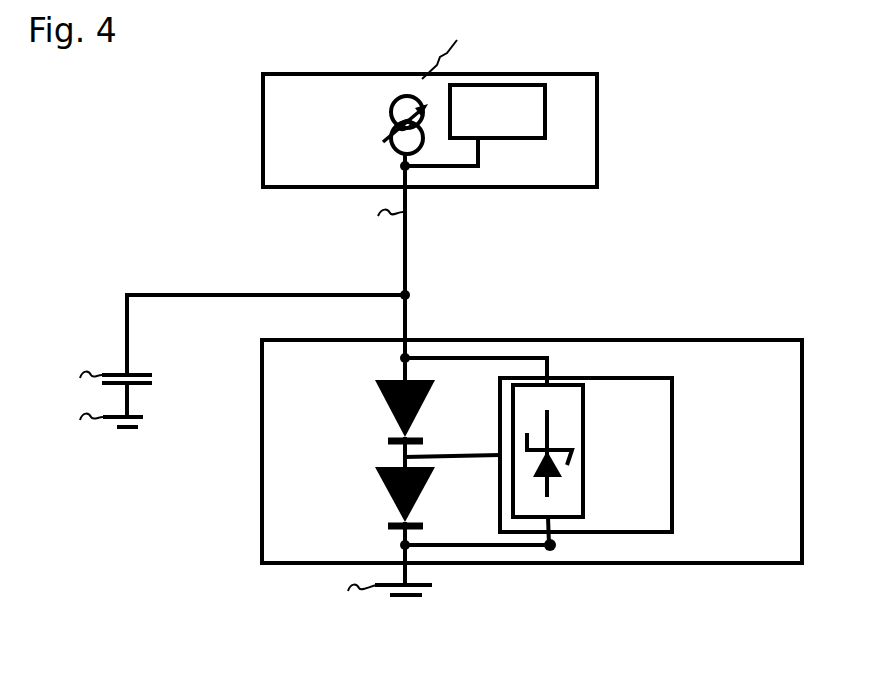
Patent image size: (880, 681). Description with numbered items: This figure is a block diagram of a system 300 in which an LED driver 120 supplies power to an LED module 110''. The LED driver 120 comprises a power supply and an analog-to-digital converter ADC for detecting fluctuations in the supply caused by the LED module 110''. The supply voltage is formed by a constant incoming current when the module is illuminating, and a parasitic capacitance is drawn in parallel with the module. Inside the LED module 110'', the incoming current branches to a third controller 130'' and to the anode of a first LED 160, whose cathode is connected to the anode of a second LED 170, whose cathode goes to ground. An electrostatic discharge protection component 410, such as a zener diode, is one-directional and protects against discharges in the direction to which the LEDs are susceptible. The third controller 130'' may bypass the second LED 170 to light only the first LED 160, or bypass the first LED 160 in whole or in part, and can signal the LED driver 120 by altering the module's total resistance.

The circuit arrangement 300 is at (248, 43).
The LED driver 120 is at (627, 40).
The LED module 110'' is at (532, 460).
The third controller 130'' is at (577, 510).
The electrostatic discharge protection component 410 is at (537, 478).
The first LED 160 is at (378, 405).
The second LED 170 is at (378, 494).